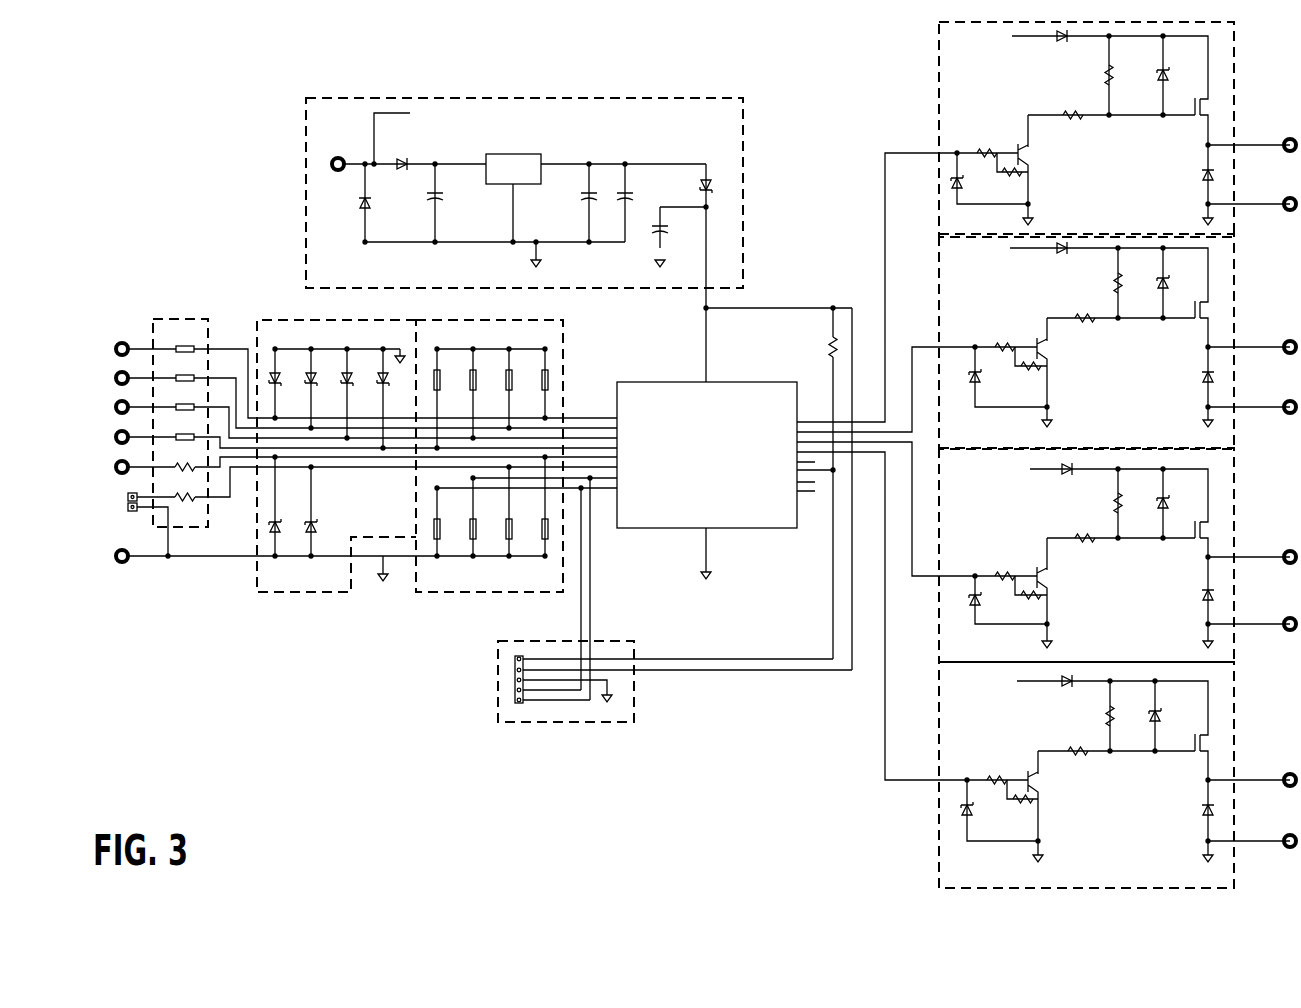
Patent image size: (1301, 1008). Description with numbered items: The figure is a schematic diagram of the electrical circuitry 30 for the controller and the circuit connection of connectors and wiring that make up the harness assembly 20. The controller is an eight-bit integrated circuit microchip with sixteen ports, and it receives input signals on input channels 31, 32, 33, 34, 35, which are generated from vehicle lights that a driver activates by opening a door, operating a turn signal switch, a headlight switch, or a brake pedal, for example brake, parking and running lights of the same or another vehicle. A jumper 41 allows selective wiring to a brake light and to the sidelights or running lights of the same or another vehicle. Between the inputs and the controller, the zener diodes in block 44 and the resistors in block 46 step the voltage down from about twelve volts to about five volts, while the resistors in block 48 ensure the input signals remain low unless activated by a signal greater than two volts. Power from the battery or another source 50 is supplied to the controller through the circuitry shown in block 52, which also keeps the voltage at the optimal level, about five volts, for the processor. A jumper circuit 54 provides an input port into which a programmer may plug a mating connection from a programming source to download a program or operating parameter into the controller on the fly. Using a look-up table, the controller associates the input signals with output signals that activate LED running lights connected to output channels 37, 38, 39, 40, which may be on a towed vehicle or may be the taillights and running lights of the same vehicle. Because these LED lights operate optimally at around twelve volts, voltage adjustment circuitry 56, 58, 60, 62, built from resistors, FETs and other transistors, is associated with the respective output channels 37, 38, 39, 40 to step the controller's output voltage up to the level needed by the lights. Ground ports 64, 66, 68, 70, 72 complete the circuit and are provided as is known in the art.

The harness assembly 20 is at (640, 382).
The electrical circuitry 30 is at (138, 103).
The input channel 31 is at (122, 340).
The input channel 32 is at (116, 374).
The input channel 33 is at (117, 404).
The input channel 34 is at (118, 444).
The input channel 35 is at (117, 474).
The output channel 37 is at (1288, 136).
The output channel 38 is at (1288, 338).
The output channel 39 is at (1288, 548).
The output channel 40 is at (1288, 771).
The jumper 41 is at (127, 508).
The zener diode block 44 is at (257, 332).
The resistor block 46 is at (183, 318).
The resistor block 48 is at (563, 340).
The power source 50 is at (340, 156).
The power circuitry block 52 is at (345, 98).
The jumper circuit 54 is at (498, 680).
The voltage adjustment circuitry 56 is at (939, 66).
The voltage adjustment circuitry 58 is at (939, 275).
The voltage adjustment circuitry 60 is at (939, 640).
The voltage adjustment circuitry 62 is at (939, 730).
The ground port 64 is at (121, 565).
The ground port 66 is at (1290, 211).
The ground port 68 is at (1290, 414).
The ground port 70 is at (1290, 631).
The ground port 72 is at (1290, 848).